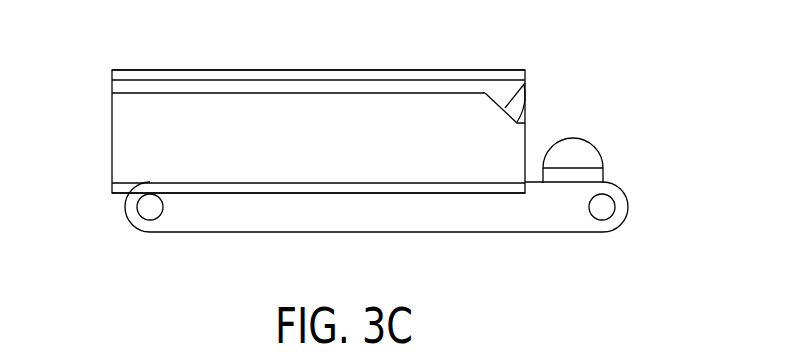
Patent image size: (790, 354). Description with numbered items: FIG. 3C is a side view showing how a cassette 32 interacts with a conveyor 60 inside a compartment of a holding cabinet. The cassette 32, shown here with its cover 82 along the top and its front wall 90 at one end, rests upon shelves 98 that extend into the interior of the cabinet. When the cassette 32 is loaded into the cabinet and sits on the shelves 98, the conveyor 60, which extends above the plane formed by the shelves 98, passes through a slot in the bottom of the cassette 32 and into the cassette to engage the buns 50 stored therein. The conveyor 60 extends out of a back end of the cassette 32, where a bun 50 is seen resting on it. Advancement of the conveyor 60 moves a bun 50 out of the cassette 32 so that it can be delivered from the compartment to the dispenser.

The cassette 32 is at (160, 103).
The bun 50 is at (573, 155).
The conveyor 60 is at (130, 216).
The cover 82 is at (298, 94).
The front wall 90 is at (111, 131).
The shelf 98 is at (122, 192).